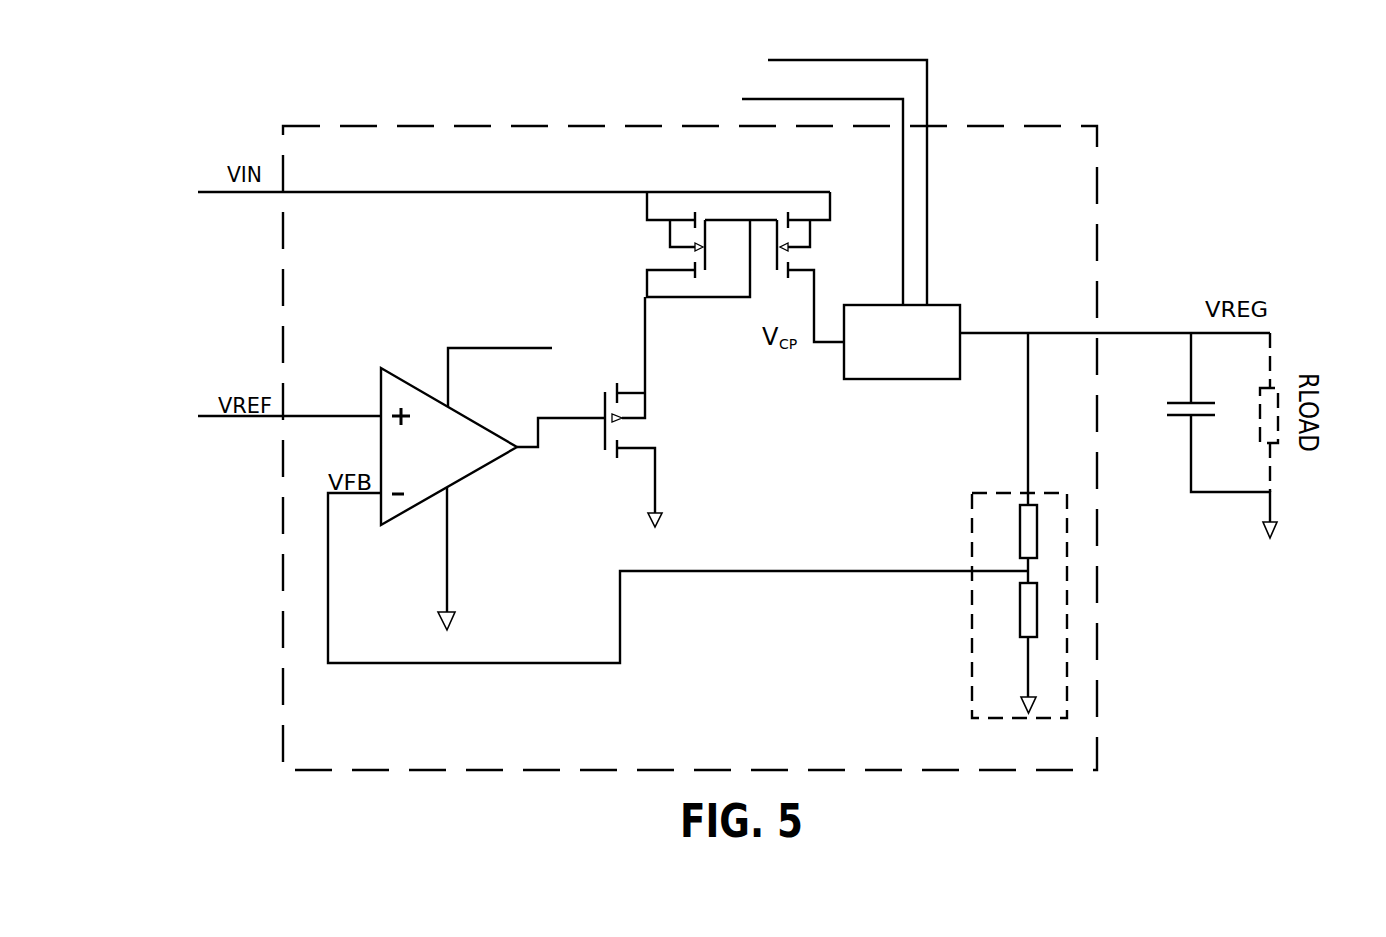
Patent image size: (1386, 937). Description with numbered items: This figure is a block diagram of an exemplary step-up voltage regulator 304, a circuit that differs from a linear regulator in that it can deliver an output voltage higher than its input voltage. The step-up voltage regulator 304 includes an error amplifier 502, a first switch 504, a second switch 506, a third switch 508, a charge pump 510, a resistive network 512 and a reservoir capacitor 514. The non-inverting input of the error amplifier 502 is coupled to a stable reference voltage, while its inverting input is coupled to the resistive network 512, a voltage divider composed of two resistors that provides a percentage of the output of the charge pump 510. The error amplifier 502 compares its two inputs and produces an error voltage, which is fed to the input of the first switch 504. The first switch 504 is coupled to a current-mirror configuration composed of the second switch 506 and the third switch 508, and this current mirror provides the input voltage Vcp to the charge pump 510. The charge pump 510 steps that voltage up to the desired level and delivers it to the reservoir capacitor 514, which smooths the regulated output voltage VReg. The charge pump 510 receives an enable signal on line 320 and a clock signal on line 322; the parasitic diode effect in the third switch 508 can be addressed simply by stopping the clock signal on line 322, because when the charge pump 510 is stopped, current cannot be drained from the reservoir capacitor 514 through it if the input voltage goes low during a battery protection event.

The step-up voltage regulator 304 is at (382, 746).
The enable signal line 320 is at (742, 98).
The clock signal line 322 is at (772, 58).
The error amplifier 502 is at (457, 457).
The switch M1 504 is at (605, 442).
The switch M2 506 is at (670, 247).
The switch M3 508 is at (777, 258).
The charge pump 510 is at (887, 379).
The resistive network 512 is at (972, 672).
The reservoir capacitor 514 is at (1173, 415).